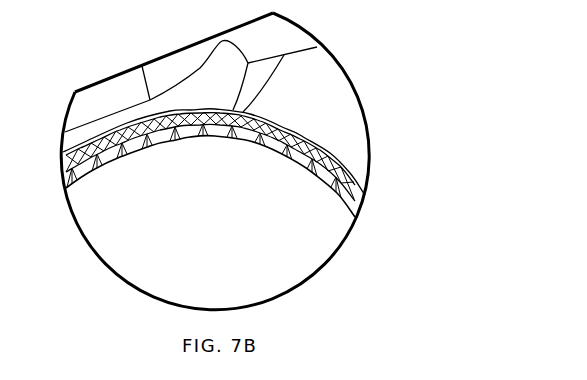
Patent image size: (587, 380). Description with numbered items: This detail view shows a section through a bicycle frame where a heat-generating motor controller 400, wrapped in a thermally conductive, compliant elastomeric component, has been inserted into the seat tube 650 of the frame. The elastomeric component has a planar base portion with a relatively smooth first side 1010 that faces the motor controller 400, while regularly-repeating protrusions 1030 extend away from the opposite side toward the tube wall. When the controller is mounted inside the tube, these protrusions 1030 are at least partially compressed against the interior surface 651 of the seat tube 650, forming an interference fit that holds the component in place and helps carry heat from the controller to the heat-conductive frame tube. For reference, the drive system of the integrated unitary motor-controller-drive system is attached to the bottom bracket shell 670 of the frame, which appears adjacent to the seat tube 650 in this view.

The motor controller 400 is at (192, 137).
The bottom bracket shell 670 is at (318, 96).
The interior surface 651 is at (321, 146).
The seat tube 650 is at (365, 189).
The protrusions 1030 is at (362, 206).
The first side 1010 is at (342, 193).